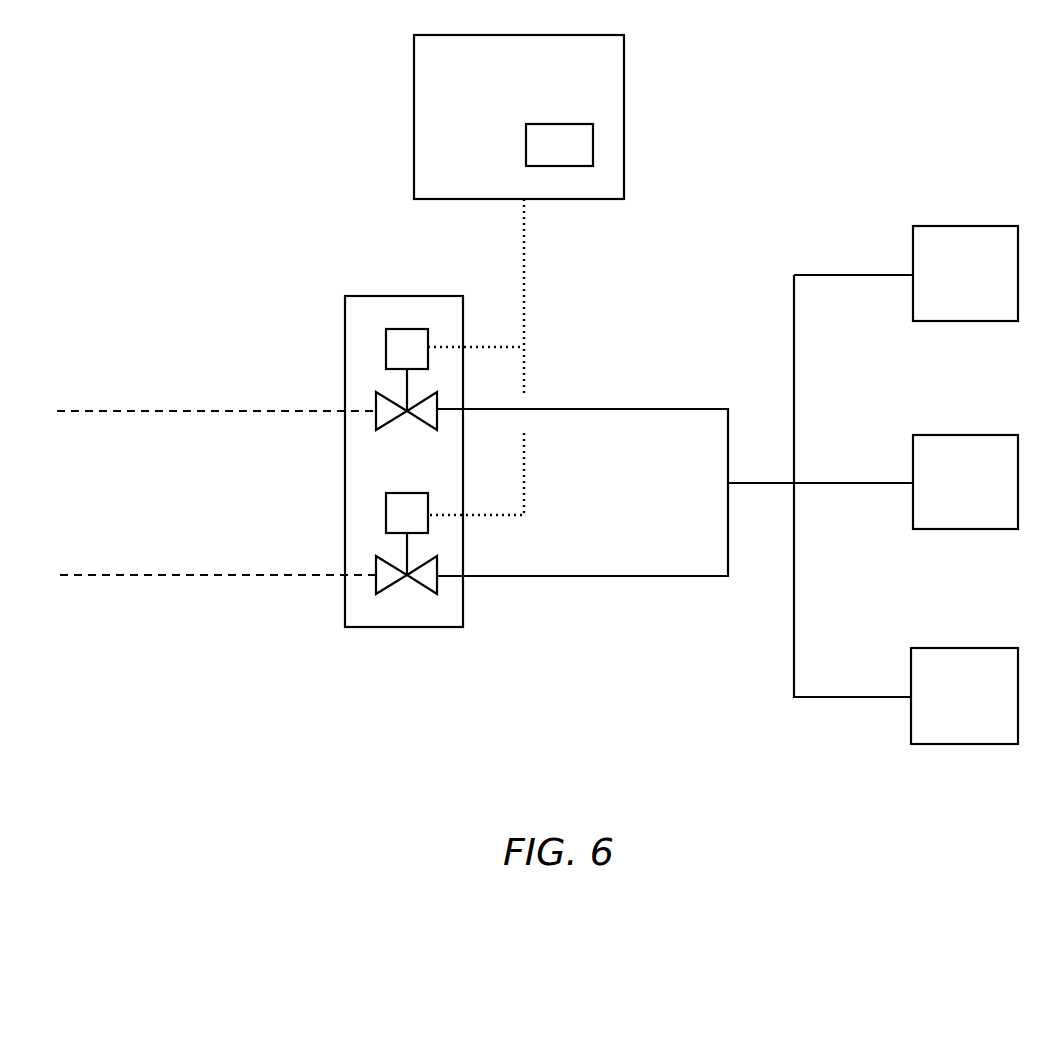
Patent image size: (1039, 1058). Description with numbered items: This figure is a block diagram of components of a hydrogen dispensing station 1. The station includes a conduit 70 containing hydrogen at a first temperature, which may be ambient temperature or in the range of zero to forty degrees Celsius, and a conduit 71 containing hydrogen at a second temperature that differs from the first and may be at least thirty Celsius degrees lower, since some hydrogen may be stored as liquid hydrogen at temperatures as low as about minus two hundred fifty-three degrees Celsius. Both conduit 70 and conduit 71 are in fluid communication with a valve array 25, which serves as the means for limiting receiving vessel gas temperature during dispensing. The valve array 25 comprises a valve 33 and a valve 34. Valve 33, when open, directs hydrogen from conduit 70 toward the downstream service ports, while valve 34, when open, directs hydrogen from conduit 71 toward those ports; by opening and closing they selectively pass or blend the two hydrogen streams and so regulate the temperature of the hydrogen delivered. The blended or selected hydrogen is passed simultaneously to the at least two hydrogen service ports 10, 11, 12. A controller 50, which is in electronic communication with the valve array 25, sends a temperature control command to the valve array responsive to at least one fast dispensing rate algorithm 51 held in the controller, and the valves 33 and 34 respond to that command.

The hydrogen dispensing station 1 is at (736, 98).
The hydrogen service port 10 is at (983, 294).
The hydrogen service port 11 is at (983, 501).
The hydrogen service port 12 is at (983, 718).
The valve array 25 is at (363, 297).
The valve 33 is at (370, 402).
The valve 34 is at (420, 585).
The controller 50 is at (476, 98).
The fast dispensing rate algorithm 51 is at (576, 163).
The conduit 70 is at (172, 411).
The conduit 71 is at (168, 573).